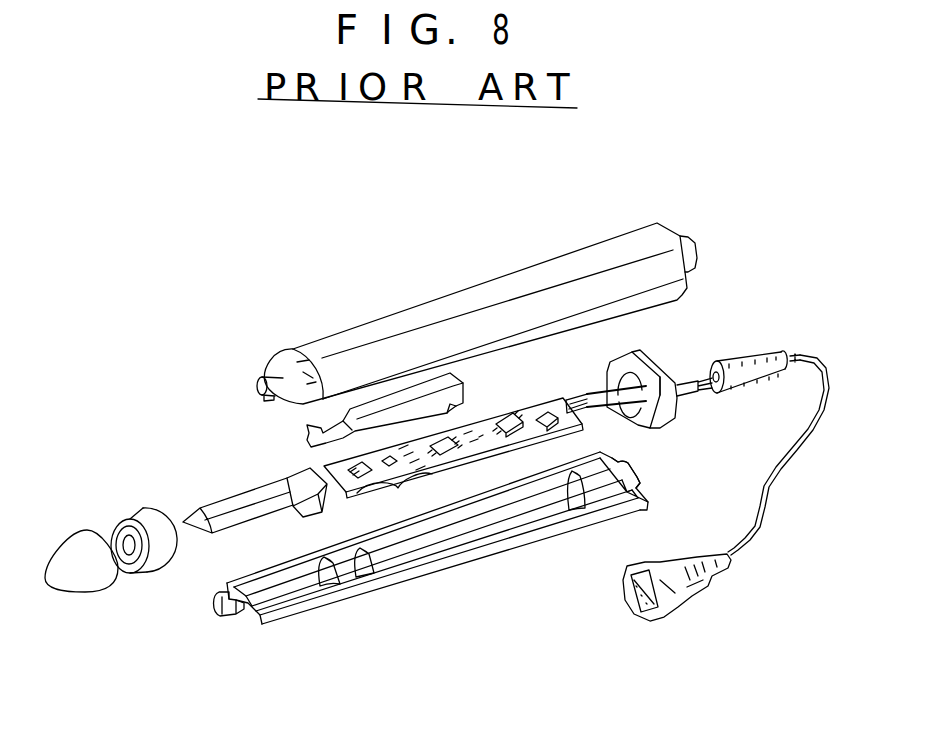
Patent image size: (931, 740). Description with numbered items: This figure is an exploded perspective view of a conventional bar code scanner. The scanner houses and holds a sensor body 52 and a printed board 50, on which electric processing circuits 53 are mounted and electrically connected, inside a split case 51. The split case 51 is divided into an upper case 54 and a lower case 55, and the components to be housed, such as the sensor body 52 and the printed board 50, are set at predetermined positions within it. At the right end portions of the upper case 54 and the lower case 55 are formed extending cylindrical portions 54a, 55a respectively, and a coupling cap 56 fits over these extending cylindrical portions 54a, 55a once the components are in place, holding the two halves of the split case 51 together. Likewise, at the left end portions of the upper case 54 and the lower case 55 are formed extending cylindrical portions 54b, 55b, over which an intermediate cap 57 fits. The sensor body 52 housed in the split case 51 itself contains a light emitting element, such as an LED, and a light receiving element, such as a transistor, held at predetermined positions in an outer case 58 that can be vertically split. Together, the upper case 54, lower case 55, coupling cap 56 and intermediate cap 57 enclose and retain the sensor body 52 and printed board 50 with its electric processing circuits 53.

The printed board 50 is at (513, 405).
The split case 51 is at (435, 268).
The sensor body 52 is at (240, 483).
The electric processing circuits 53 is at (385, 447).
The upper case 54 is at (520, 282).
The extending cylindrical portion 54a is at (697, 252).
The extending cylindrical portion 54b is at (260, 378).
The lower case 55 is at (427, 550).
The extending cylindrical portion 55a is at (630, 472).
The extending cylindrical portion 55b is at (225, 617).
The coupling cap 56 is at (652, 373).
The intermediate cap 57 is at (145, 505).
The outer case 58 is at (227, 505).